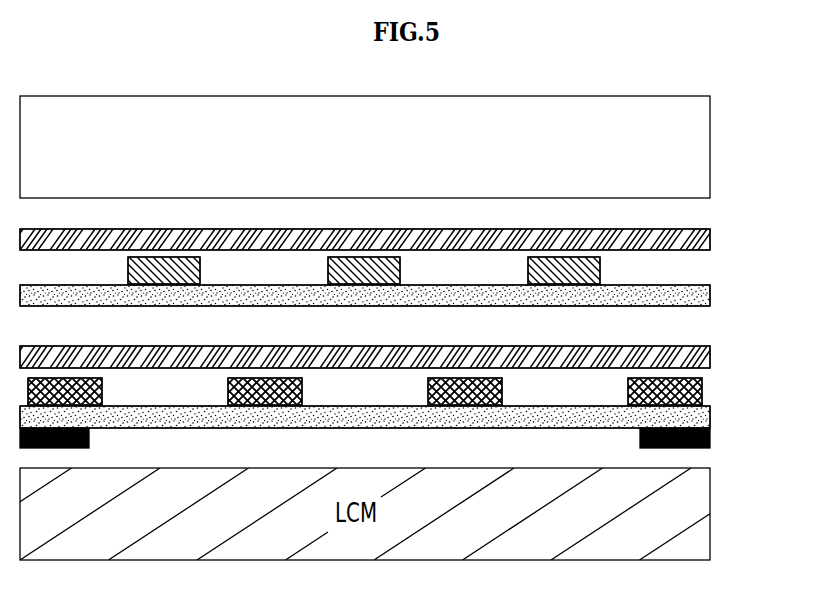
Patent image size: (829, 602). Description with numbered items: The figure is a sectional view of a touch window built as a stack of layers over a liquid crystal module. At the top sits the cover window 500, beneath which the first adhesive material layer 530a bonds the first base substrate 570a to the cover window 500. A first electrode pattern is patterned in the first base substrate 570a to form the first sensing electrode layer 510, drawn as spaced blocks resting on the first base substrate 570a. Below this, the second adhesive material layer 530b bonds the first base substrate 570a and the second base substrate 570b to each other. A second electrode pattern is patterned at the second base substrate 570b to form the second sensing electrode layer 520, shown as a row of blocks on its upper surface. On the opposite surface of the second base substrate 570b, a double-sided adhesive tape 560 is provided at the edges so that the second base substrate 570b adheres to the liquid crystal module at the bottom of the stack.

The cover window 500 is at (703, 144).
The first adhesive material layer 530a is at (690, 238).
The first sensing electrode layer 510 is at (600, 275).
The first base substrate 570a is at (705, 294).
The second adhesive material layer 530b is at (708, 354).
The second sensing electrode layer 520 is at (702, 389).
The second base substrate 570b is at (704, 415).
The double-sided adhesive tape 560 is at (710, 442).